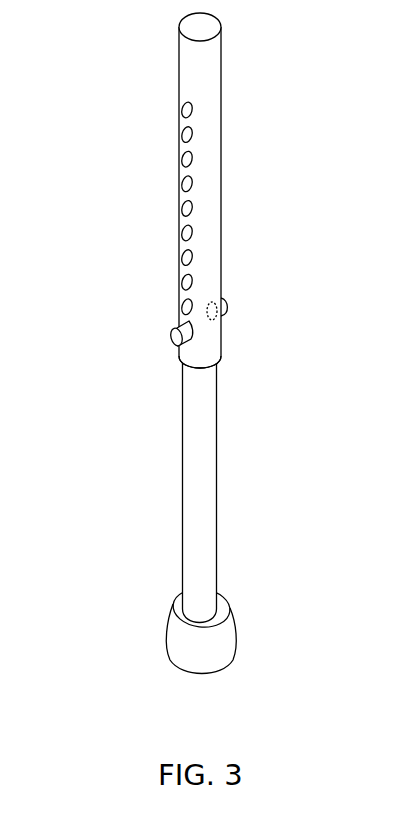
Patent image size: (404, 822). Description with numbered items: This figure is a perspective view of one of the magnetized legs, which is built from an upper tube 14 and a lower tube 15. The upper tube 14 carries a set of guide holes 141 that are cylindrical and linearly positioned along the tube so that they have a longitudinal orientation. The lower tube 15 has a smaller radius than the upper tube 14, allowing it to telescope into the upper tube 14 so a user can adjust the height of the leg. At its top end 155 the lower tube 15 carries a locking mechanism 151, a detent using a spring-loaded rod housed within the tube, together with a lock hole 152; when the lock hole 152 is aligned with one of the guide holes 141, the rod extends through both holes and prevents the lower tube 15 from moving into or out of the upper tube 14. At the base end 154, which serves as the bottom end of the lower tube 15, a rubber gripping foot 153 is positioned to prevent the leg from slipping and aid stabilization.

The upper tube 14 is at (207, 60).
The set of guide holes 141 is at (186, 110).
The lower tube 15 is at (192, 476).
The locking mechanism 151 is at (174, 337).
The lock hole 152 is at (219, 314).
The gripping foot 153 is at (173, 648).
The base end 154 is at (212, 603).
The top end 155 is at (212, 385).